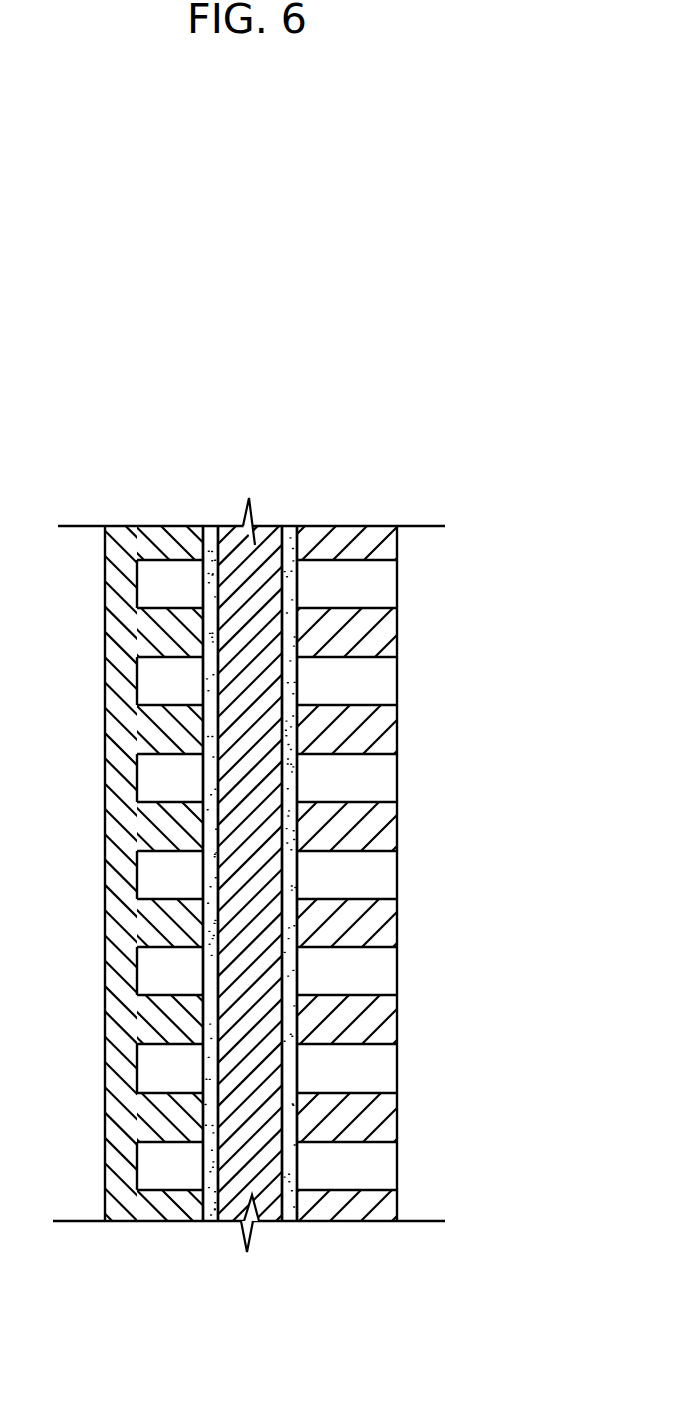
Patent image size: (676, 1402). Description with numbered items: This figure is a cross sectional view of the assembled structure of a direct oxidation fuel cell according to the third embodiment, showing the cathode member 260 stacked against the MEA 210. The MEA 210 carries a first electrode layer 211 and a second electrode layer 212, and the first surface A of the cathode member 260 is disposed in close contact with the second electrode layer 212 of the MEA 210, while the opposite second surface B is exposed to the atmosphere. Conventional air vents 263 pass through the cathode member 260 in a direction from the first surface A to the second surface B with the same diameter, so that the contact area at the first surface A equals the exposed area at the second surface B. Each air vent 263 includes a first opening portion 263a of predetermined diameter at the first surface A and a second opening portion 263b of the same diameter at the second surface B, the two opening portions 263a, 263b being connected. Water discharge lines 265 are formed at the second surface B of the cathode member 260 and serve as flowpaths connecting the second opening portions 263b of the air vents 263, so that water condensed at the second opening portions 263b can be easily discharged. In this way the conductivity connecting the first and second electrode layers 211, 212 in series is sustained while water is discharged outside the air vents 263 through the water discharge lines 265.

The cathode member 260 is at (313, 892).
The air vent 263 is at (408, 873).
The first opening portion 263a is at (340, 991).
The second opening portion 263b is at (397, 960).
The water discharge line 265 is at (396, 805).
The MEA 210 is at (260, 1228).
The first electrode layer 211 is at (208, 1222).
The second electrode layer 212 is at (291, 1222).
The first surface A is at (285, 1077).
The second surface B is at (397, 1118).